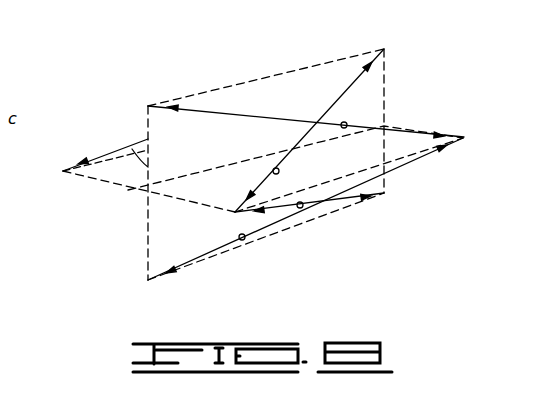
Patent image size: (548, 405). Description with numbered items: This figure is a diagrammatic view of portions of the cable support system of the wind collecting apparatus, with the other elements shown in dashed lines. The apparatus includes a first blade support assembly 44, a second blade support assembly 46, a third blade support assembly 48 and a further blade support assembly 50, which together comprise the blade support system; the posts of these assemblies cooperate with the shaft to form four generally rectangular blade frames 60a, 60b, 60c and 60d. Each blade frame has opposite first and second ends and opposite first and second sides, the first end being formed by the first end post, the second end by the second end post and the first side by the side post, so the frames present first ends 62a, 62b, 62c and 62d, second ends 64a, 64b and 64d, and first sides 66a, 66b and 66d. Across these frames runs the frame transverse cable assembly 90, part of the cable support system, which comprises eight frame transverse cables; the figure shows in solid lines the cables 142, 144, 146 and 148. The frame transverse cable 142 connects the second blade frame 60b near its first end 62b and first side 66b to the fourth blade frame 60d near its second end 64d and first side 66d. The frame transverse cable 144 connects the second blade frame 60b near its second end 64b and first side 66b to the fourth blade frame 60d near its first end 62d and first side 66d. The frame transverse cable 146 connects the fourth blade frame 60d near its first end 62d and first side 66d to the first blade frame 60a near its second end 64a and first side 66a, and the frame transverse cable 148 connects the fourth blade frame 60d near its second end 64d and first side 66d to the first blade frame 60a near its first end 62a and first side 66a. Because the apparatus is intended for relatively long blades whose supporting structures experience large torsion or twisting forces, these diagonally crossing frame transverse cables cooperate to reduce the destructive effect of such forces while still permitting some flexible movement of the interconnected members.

The first blade support assembly 44 is at (183, 90).
The second blade support assembly 46 is at (232, 252).
The third blade support assembly 48 is at (96, 190).
The third blade support assembly 50 is at (206, 210).
The first blade frame 60a is at (140, 121).
The second blade frame 60b is at (140, 260).
The third blade frame 60c is at (82, 186).
The fourth blade frame 60d is at (226, 198).
The first end of first blade frame 62a is at (130, 150).
The first end of second blade frame 62b is at (147, 229).
The first end of third blade frame 62c is at (127, 191).
The first end of fourth blade frame 62d is at (213, 205).
The second end of first blade frame 64a is at (389, 60).
The second end of second blade frame 64b is at (385, 194).
The second end of fourth blade frame 64d is at (396, 125).
The first side of first blade frame 66a is at (271, 76).
The first side of second blade frame 66b is at (313, 223).
The first side of fourth blade frame 66d is at (406, 158).
The frame transverse cable assembly 90 is at (223, 105).
The frame transverse cable 142 is at (243, 241).
The frame transverse cable 144 is at (301, 203).
The frame transverse cable 146 is at (274, 169).
The frame transverse cable 148 is at (347, 124).